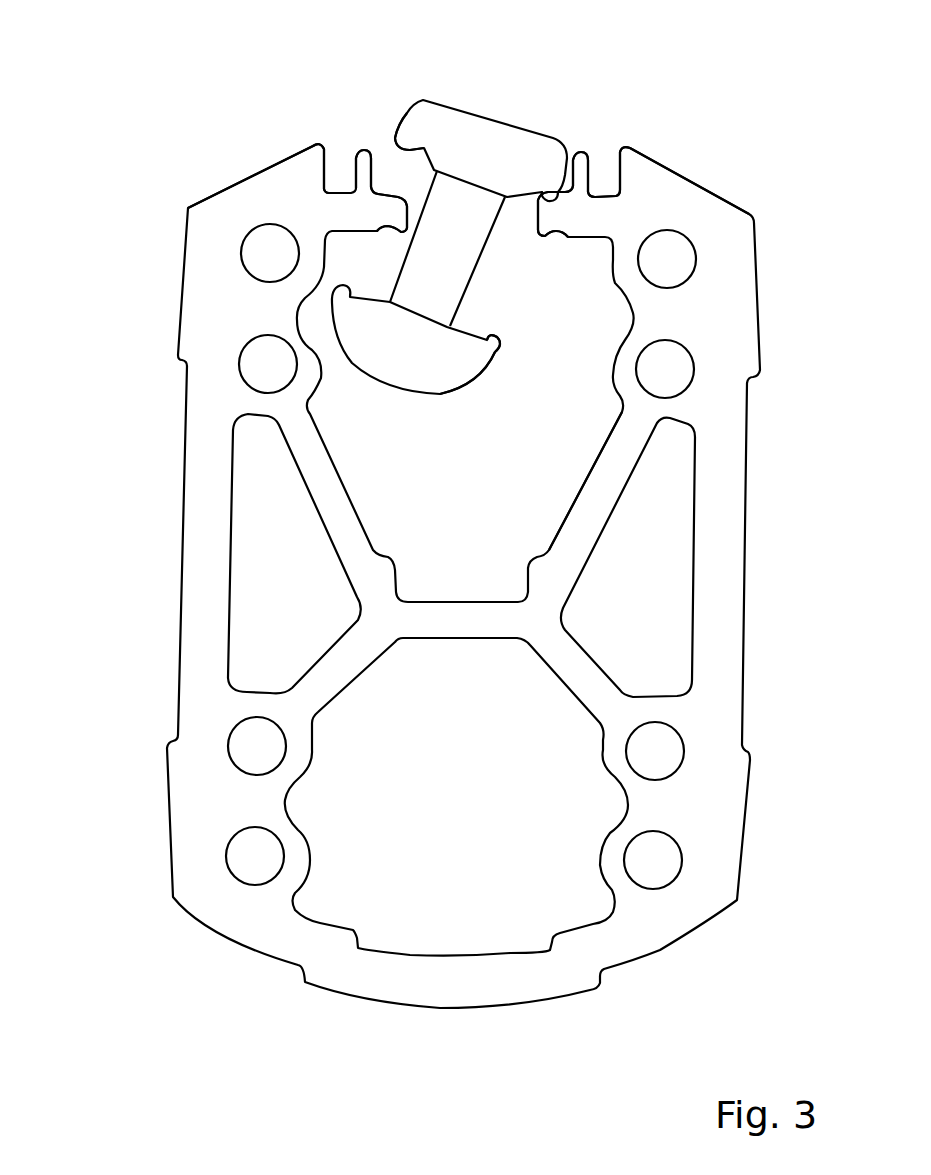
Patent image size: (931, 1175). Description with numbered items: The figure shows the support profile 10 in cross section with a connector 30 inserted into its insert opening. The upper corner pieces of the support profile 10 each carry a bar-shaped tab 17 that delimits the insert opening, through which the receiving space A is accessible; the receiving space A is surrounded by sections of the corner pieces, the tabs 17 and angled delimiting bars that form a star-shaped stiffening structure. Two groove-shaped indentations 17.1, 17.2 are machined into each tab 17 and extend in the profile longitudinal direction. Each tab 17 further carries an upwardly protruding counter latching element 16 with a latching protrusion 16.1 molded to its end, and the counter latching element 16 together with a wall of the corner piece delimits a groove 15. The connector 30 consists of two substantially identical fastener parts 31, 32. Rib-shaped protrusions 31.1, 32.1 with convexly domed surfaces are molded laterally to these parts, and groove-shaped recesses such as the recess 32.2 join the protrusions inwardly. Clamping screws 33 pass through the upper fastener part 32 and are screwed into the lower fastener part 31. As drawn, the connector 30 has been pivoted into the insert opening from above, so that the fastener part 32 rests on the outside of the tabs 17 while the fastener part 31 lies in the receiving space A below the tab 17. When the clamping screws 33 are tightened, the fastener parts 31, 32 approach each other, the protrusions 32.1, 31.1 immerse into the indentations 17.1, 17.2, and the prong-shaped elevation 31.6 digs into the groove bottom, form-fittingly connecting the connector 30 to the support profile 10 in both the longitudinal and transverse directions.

The support profile 10 is at (152, 513).
The groove 15 is at (333, 183).
The counter latching element 16 is at (357, 187).
The latching protrusion 16.1 is at (357, 152).
The tab 17 is at (553, 217).
The indentation 17.1 is at (550, 236).
The indentation 17.2 is at (415, 143).
The connector 30 is at (356, 230).
The fastener part 31 is at (398, 367).
The protrusion 31.1 is at (493, 360).
The elevation 31.6 is at (498, 333).
The fastener part 32 is at (493, 137).
The protrusion 32.1 is at (397, 150).
The recess 32.2 is at (390, 147).
The clamping screw 33 is at (430, 278).
The receiving space A is at (530, 470).